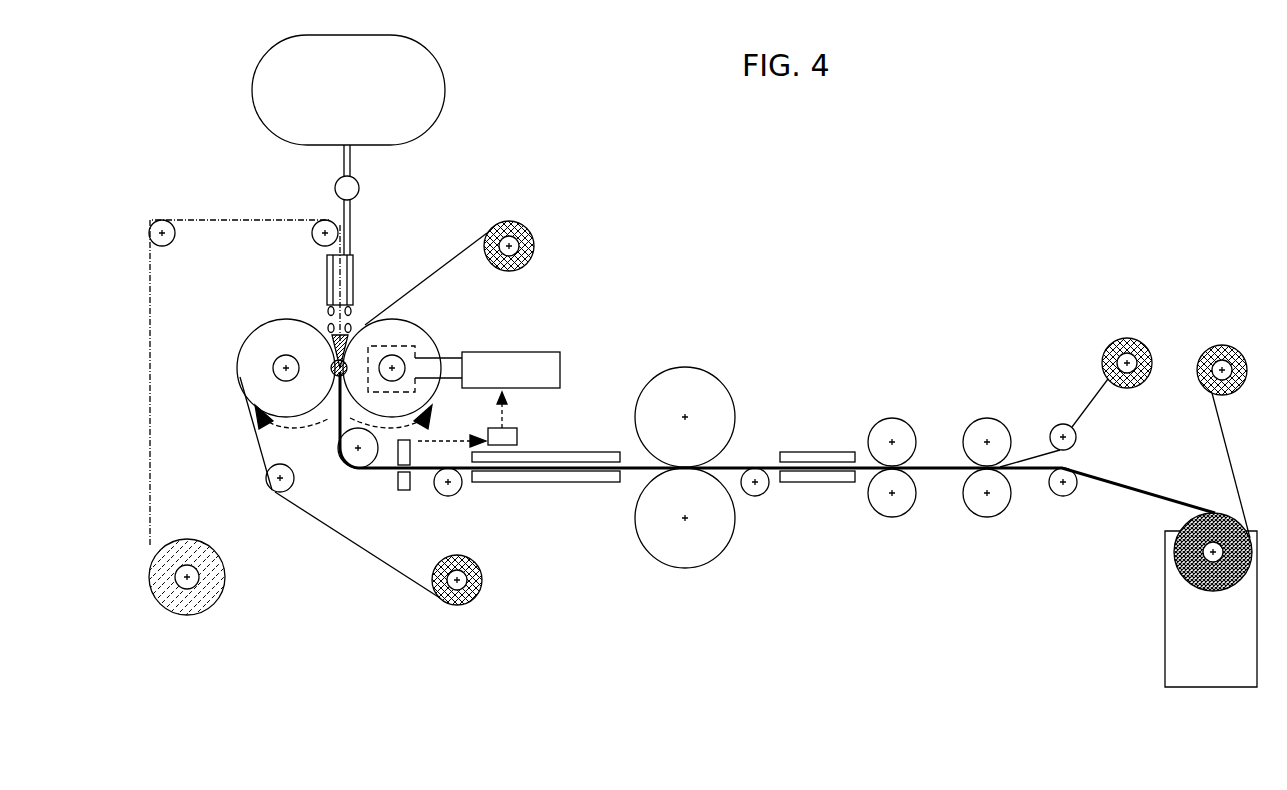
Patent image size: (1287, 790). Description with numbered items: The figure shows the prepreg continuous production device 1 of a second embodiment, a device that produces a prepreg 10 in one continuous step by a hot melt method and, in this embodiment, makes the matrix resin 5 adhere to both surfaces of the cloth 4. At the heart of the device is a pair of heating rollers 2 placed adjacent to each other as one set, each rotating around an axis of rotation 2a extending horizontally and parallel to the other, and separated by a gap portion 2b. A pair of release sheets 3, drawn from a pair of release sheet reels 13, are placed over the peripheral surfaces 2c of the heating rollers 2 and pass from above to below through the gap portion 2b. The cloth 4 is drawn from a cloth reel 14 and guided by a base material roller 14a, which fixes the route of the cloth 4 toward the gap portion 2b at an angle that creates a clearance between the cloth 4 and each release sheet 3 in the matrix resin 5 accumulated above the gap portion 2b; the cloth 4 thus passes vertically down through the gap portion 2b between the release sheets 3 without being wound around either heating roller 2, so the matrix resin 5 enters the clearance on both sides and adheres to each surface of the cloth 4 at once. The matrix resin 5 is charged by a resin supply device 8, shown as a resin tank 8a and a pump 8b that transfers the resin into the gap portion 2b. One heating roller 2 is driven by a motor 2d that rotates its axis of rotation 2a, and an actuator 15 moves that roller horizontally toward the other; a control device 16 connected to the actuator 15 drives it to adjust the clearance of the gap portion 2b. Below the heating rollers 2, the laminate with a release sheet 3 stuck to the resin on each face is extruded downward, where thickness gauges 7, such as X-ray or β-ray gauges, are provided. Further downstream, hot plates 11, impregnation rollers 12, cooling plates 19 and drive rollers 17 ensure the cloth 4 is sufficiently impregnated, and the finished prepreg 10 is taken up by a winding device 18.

The prepreg continuous production device 1 is at (1080, 122).
The heating rollers 2 is at (362, 361).
The axis of rotation 2a is at (281, 358).
The gap portion 2b is at (402, 350).
The peripheral surface 2c is at (330, 337).
The motor 2d is at (415, 385).
The release sheets 3 is at (442, 257).
The cloth 4 is at (243, 363).
The matrix resin 5 is at (347, 328).
The thickness gauges 7 is at (407, 492).
The resin supply device 8 is at (313, 145).
The resin tank 8a is at (361, 112).
The pump 8b is at (336, 188).
The prepreg 10 is at (1185, 578).
The hot plates 11 is at (542, 482).
The impregnation rollers 12 is at (685, 380).
The release sheet reels 13 is at (512, 247).
The cloth reel 14 is at (190, 585).
The base material roller 14a is at (313, 237).
The actuator 15 is at (548, 368).
The control device 16 is at (518, 433).
The drive rollers 17 is at (980, 505).
The winding device 18 is at (1178, 673).
The cooling plates 19 is at (817, 455).